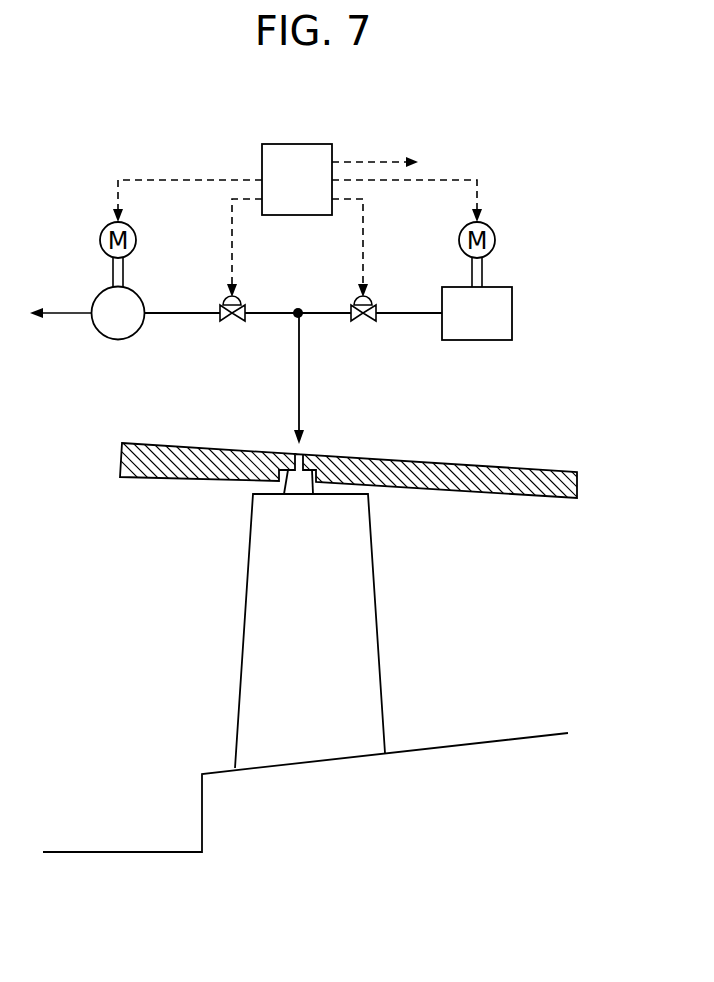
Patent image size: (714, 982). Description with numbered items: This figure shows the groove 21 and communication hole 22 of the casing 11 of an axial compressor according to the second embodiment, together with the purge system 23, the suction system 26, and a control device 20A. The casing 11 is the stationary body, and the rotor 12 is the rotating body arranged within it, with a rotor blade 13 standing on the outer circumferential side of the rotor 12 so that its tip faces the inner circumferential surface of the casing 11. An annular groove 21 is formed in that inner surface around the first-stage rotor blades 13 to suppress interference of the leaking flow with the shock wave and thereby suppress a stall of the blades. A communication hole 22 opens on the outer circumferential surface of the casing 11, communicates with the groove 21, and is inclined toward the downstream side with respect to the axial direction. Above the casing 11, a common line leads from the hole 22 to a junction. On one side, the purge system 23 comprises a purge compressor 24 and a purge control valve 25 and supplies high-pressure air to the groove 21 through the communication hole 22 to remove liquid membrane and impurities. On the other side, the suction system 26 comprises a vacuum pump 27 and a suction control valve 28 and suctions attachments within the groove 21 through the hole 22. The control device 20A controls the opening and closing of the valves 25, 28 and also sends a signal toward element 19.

The control device 20A is at (324, 195).
The connection to element 19 is at (416, 162).
The vacuum pump 27 is at (102, 329).
The suction system 26 is at (188, 313).
The suction control valve 28 is at (243, 301).
The purge control valve 25 is at (374, 301).
The purge system 23 is at (408, 313).
The purge compressor 24 is at (461, 329).
The casing 11 is at (507, 455).
The groove 21 is at (288, 473).
The communication hole 22 is at (311, 475).
The rotor blade 13 is at (297, 662).
The rotor 12 is at (393, 823).